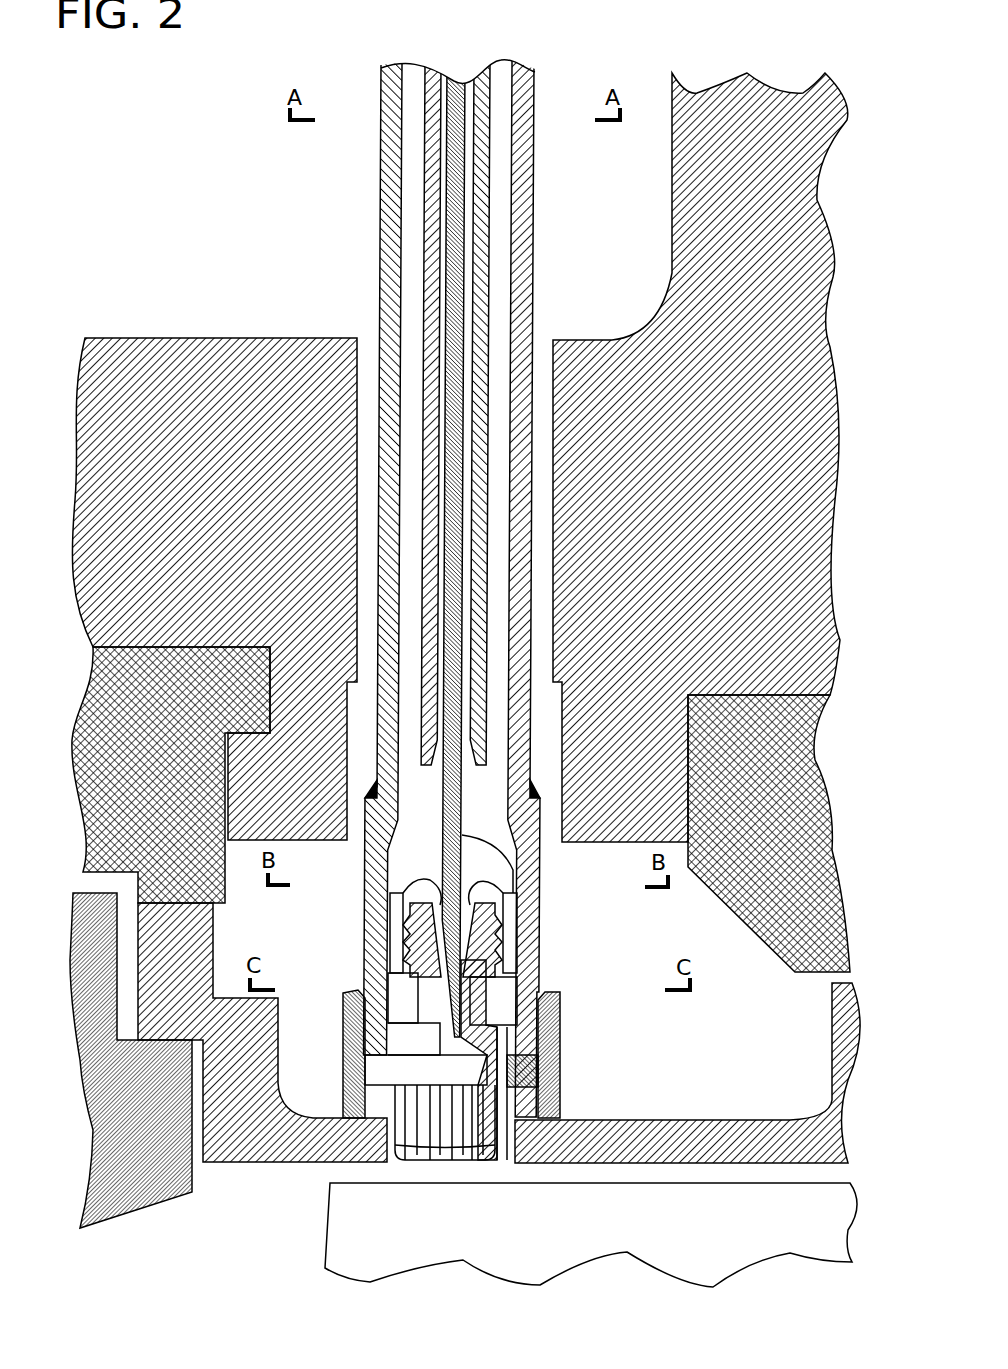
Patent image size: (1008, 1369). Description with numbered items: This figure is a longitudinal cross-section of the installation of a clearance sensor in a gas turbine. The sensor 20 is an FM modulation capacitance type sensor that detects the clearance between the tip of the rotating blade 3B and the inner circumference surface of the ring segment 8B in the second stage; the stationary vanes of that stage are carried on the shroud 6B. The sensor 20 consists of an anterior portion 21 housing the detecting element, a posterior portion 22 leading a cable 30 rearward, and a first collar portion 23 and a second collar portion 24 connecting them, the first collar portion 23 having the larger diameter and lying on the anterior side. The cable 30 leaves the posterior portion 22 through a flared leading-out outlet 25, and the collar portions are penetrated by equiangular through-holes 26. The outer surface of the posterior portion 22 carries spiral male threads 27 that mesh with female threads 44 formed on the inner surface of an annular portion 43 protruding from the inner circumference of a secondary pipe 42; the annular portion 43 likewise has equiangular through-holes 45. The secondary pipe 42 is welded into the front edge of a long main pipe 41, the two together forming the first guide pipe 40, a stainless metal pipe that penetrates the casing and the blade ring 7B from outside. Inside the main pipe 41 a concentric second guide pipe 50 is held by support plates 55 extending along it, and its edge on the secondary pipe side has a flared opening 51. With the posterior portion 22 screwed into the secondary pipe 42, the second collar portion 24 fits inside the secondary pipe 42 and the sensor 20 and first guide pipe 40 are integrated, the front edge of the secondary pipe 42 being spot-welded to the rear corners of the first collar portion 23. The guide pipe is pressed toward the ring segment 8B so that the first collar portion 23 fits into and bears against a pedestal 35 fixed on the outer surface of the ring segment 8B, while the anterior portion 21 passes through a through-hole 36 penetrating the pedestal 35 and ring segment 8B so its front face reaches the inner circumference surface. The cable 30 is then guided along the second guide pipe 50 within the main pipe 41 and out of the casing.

The blade ring 7B is at (213, 345).
The shroud 6B is at (115, 1207).
The ring segment 8B is at (268, 1150).
The rotating blade 3B is at (335, 1248).
The first guide pipe 40 is at (531, 178).
The main pipe 41 is at (530, 218).
The second guide pipe 50 is at (420, 235).
The support plate 55 is at (405, 270).
The opening 51 is at (423, 768).
The cable 30 is at (513, 853).
The leading-out outlet 25 is at (396, 893).
The through-hole 45 is at (408, 945).
The posterior portion 22 is at (395, 1000).
The second collar portion 24 is at (356, 1010).
The first collar portion 23 is at (390, 1065).
The secondary pipe 42 is at (525, 880).
The annular portion 43 is at (510, 905).
The female threads 44 is at (510, 938).
The male threads 27 is at (515, 983).
The through-hole 26 is at (520, 1010).
The pedestal 35 is at (560, 1083).
The sensor 20 is at (420, 1168).
The anterior portion 21 is at (450, 1140).
The through-hole 36 is at (509, 1155).